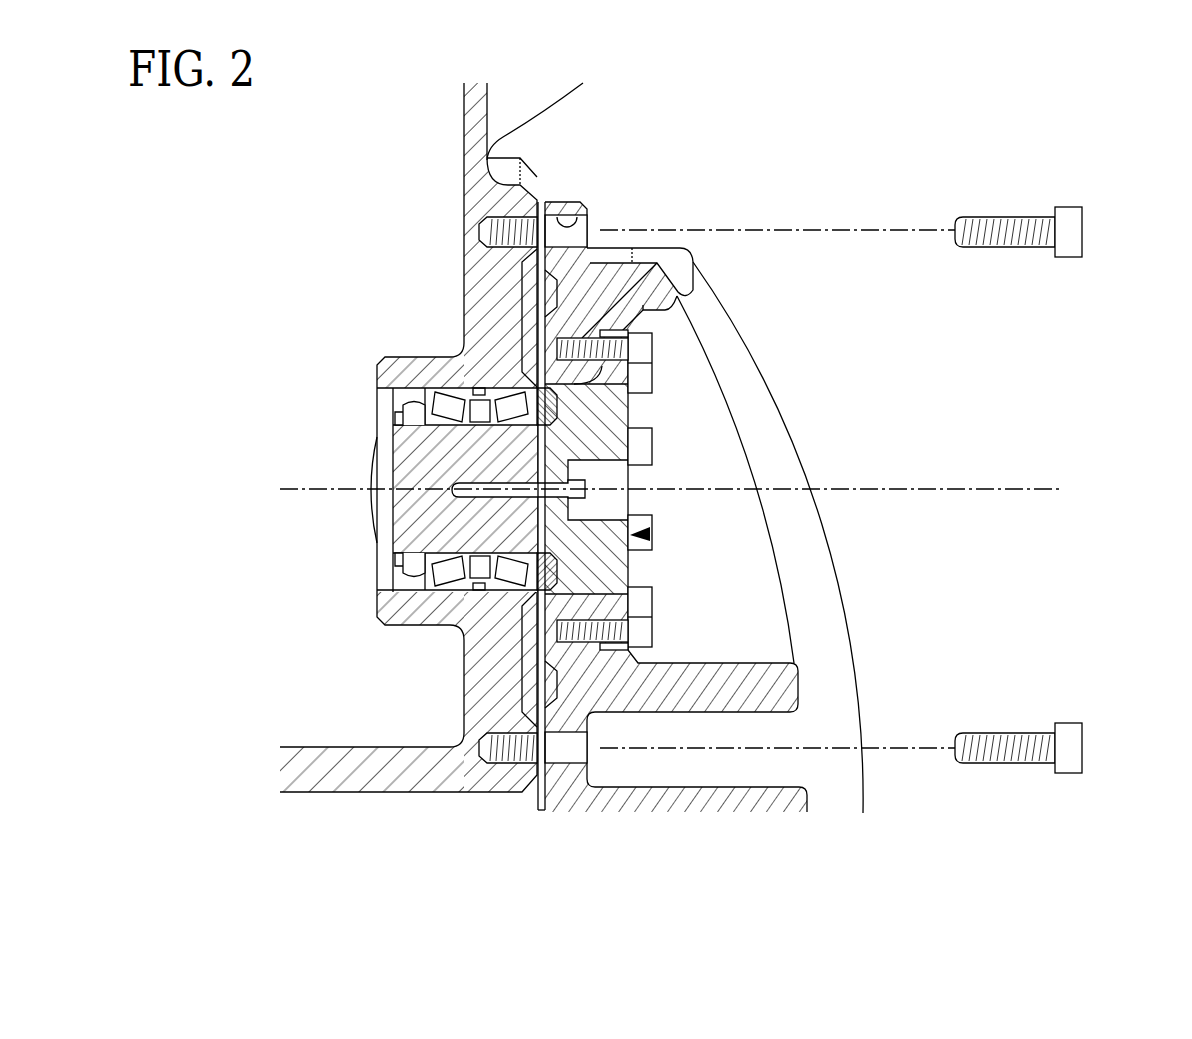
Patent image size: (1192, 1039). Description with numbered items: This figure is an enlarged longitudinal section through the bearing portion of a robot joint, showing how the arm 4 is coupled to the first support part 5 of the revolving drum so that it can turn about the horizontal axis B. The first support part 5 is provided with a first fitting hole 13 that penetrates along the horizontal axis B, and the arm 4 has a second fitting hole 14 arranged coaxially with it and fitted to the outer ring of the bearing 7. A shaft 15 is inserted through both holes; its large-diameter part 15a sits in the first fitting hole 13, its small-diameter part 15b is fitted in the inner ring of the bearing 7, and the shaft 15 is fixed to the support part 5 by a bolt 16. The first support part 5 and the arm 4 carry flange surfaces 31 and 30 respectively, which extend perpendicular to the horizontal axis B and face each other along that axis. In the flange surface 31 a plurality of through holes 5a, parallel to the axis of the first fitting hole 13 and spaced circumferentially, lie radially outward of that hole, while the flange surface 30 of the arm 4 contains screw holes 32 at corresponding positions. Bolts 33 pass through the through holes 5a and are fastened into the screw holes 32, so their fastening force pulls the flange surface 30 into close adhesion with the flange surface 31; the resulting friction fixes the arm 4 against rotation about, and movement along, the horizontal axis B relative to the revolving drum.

The arm 4 is at (355, 793).
The first support part 5 is at (633, 260).
The through holes 5a is at (578, 212).
The bearing 7 is at (453, 405).
The first fitting hole 13 is at (588, 578).
The second fitting hole 14 is at (395, 580).
The shaft 15 is at (652, 533).
The large-diameter part 15a is at (600, 372).
The small-diameter part 15b is at (405, 400).
The bolt 16 is at (652, 346).
The flange surface 30 is at (546, 775).
The flange surface 31 is at (539, 810).
The screw holes 32 is at (487, 232).
The bolts 33 is at (1082, 230).
The horizontal axis B is at (288, 486).